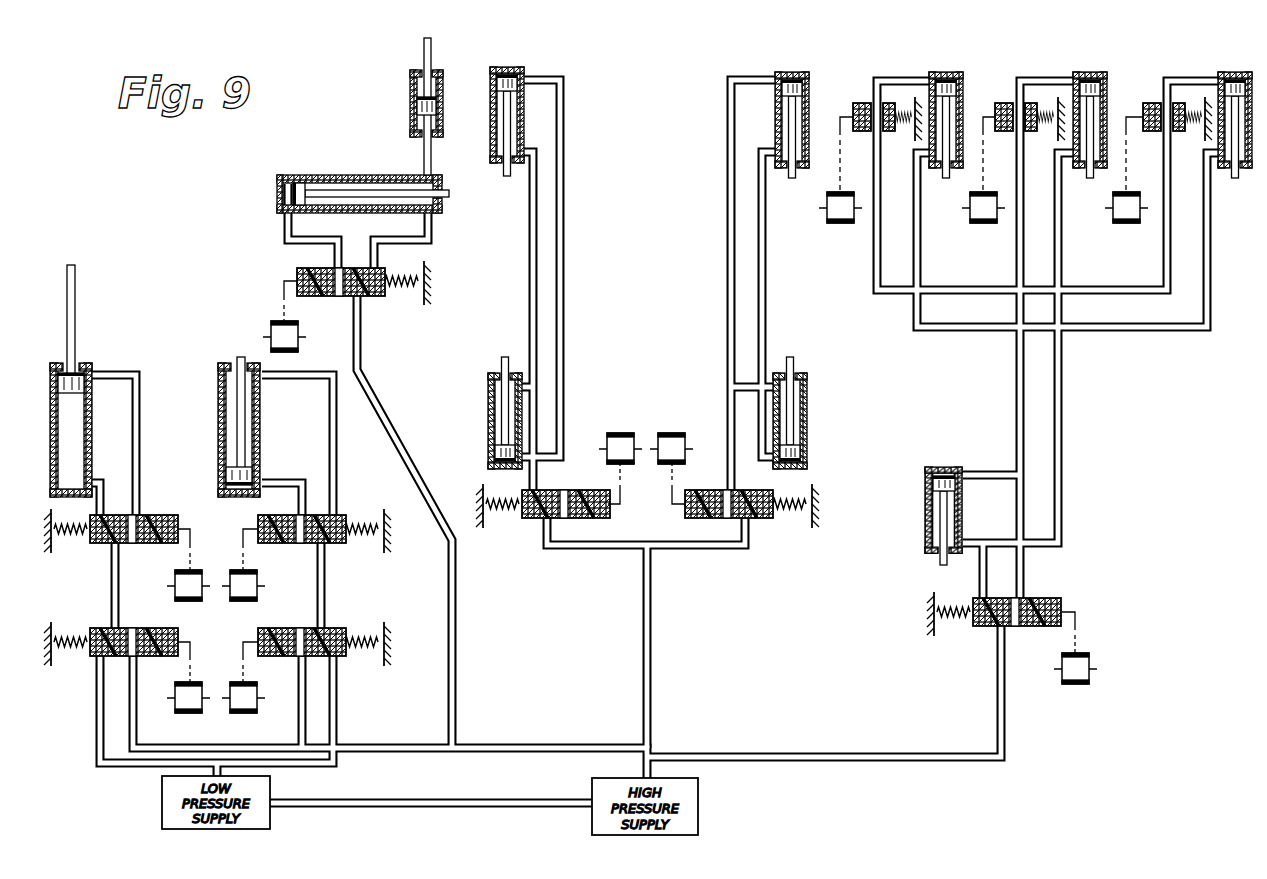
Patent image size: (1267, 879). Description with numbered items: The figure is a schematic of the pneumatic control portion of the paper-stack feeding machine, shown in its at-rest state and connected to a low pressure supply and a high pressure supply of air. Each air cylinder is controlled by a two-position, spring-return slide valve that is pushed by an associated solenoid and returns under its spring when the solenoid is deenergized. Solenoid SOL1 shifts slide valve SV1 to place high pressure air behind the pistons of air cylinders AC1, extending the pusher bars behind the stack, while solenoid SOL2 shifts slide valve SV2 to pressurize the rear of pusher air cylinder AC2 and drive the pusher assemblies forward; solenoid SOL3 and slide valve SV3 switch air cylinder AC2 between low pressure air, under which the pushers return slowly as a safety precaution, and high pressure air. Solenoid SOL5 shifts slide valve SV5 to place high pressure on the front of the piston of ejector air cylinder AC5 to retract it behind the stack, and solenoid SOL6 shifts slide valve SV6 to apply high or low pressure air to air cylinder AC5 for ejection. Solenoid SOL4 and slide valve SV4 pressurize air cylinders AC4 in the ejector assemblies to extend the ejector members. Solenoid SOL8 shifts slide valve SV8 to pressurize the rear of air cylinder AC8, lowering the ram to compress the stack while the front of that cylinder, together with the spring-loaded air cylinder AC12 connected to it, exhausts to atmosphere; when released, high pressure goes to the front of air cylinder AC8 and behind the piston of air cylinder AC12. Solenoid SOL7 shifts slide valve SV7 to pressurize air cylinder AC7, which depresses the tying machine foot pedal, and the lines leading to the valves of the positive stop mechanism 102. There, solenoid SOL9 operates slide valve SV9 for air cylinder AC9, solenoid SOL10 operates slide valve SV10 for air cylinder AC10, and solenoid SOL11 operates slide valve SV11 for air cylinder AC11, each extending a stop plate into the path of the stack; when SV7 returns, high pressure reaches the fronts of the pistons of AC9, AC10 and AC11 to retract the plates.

The positive stop mechanism 102 is at (1018, 53).
The air cylinder AC1 is at (511, 67).
The pusher air cylinder AC2 is at (218, 363).
The air cylinder AC4 is at (792, 72).
The ejector mechanism air cylinder AC5 is at (92, 363).
The air cylinder AC7 is at (925, 512).
The air cylinder AC8 is at (360, 176).
The air cylinder AC9 is at (1090, 72).
The air cylinder AC10 is at (947, 72).
The air cylinder AC11 is at (1240, 72).
The air cylinder AC12 is at (410, 96).
The slide valve SV1 is at (600, 518).
The slide valve SV2 is at (340, 545).
The slide valve SV3 is at (338, 628).
The slide valve SV4 is at (715, 518).
The slide valve SV5 is at (150, 515).
The slide valve SV6 is at (95, 628).
The slide valve SV7 is at (1042, 598).
The slide valve SV8 is at (297, 270).
The slide valve SV9 is at (1000, 103).
The slide valve SV10 is at (860, 103).
The slide valve SV11 is at (1150, 103).
The solenoid SOL1 is at (613, 433).
The solenoid SOL2 is at (257, 584).
The solenoid SOL3 is at (257, 714).
The solenoid SOL4 is at (672, 433).
The solenoid SOL5 is at (175, 582).
The solenoid SOL6 is at (200, 714).
The solenoid SOL7 is at (1089, 665).
The solenoid SOL8 is at (272, 323).
The solenoid SOL9 is at (990, 225).
The solenoid SOL10 is at (847, 223).
The solenoid SOL11 is at (1135, 225).